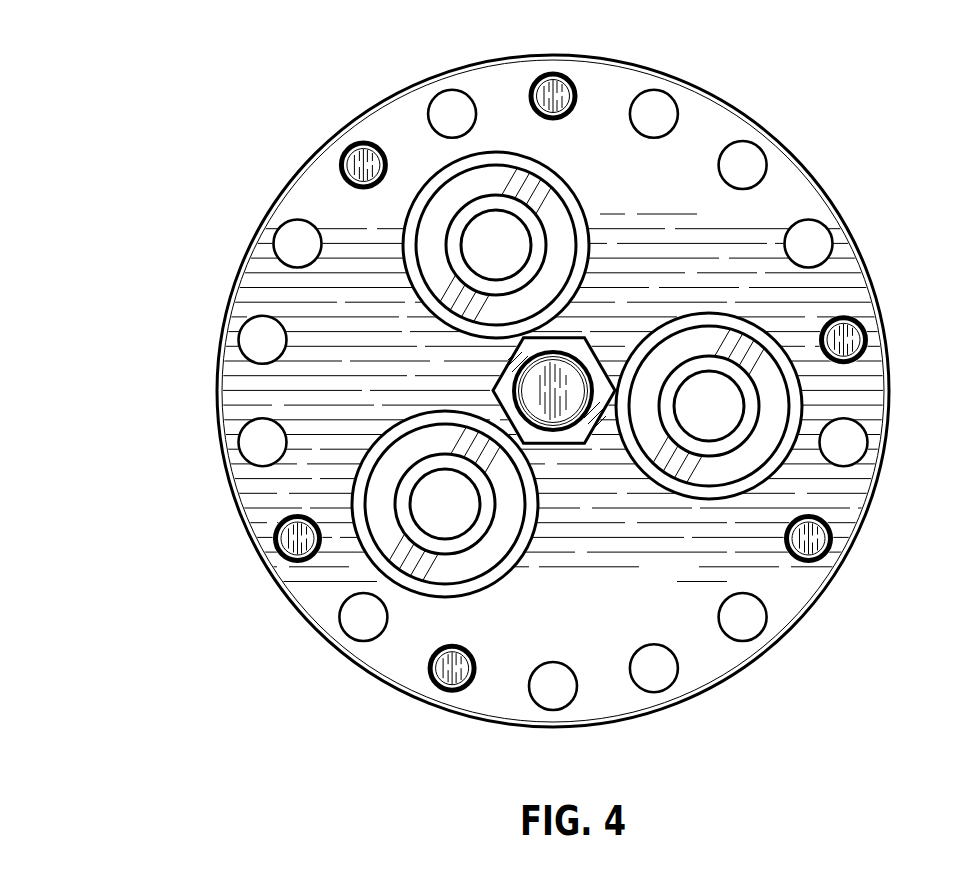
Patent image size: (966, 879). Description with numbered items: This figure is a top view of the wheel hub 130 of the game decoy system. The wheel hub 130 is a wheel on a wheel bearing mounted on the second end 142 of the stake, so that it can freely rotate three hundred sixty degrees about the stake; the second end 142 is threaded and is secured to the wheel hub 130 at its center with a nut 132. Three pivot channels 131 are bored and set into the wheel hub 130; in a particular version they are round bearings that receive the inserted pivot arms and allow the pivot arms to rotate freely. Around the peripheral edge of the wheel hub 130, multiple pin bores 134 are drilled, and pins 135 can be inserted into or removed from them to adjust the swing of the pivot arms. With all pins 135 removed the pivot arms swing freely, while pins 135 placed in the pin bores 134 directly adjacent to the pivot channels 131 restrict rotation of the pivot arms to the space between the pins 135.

The wheel hub 130 is at (289, 161).
The pivot channel 131 is at (723, 403).
The nut 132 is at (580, 347).
The pin bore 134 is at (648, 98).
The pin 135 is at (554, 82).
The second end 142 is at (535, 397).